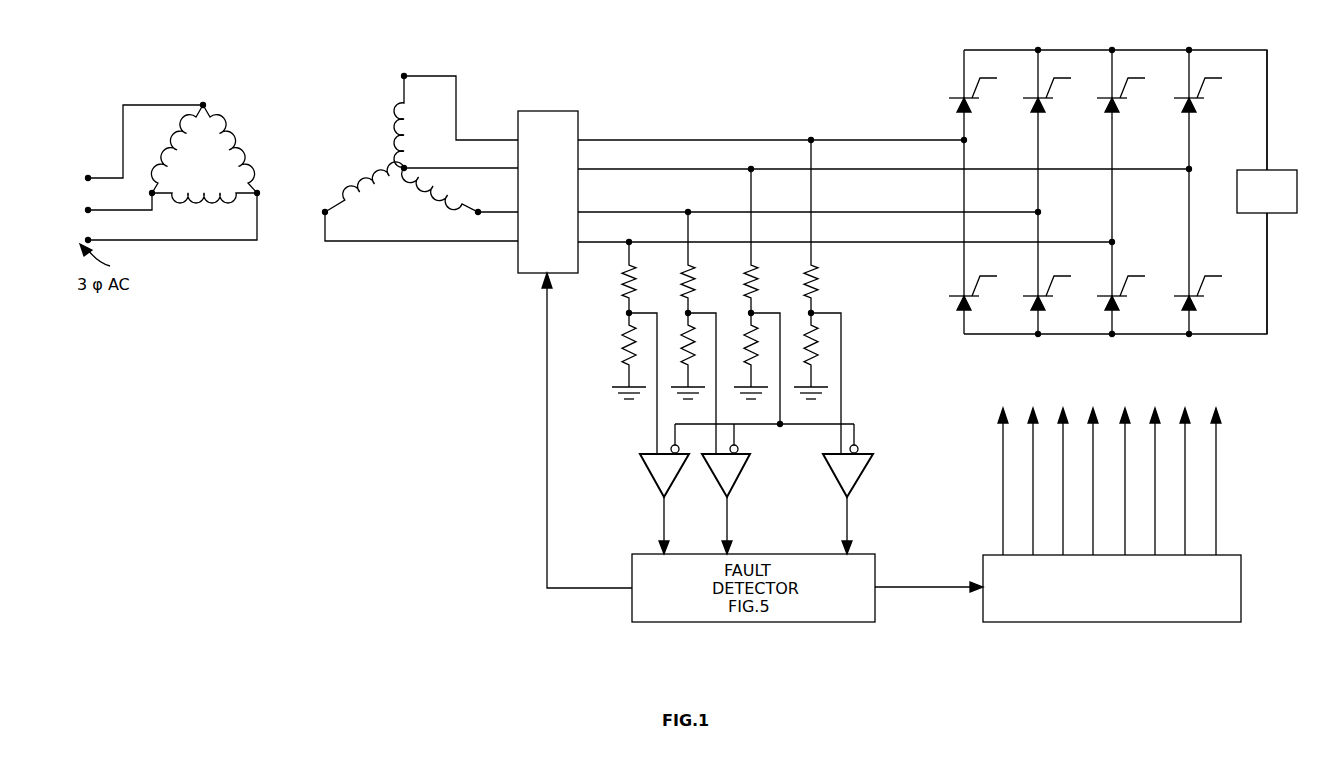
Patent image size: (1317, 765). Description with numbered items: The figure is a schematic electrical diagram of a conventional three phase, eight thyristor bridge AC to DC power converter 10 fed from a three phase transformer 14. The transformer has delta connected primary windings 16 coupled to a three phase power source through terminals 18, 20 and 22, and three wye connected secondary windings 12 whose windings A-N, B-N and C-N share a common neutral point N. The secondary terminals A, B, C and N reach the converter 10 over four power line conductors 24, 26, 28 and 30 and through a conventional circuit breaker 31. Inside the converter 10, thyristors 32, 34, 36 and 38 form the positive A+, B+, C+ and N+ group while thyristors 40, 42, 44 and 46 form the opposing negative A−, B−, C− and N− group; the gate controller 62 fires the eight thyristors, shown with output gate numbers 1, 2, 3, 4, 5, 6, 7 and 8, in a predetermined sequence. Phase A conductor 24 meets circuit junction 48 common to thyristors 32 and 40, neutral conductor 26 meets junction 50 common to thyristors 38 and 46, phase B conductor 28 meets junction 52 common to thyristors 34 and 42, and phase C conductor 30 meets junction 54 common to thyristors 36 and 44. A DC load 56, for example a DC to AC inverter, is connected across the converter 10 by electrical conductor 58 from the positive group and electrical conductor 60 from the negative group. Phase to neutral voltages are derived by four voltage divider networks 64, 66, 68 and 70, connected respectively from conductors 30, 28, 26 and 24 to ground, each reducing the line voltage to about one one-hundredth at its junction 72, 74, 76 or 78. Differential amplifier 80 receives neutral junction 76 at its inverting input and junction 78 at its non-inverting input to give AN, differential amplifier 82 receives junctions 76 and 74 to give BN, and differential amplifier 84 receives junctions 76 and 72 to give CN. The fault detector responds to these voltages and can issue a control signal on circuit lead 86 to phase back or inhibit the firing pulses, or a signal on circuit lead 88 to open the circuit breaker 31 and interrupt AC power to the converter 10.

The thyristor bridge AC to DC power converter 10 is at (942, 52).
The wye connected secondary windings 12 is at (439, 129).
The three phase transformer 14 is at (316, 140).
The delta connected primary windings 16 is at (214, 170).
The terminal 18 is at (98, 173).
The terminal 20 is at (92, 209).
The terminal 22 is at (92, 239).
The power line conductor 24 is at (838, 140).
The power line conductor 26 is at (856, 172).
The power line conductor 28 is at (856, 215).
The power line conductor 30 is at (856, 245).
The circuit breaker 31 is at (552, 110).
The thyristor 32 is at (973, 101).
The thyristor 34 is at (1048, 101).
The thyristor 36 is at (1117, 101).
The thyristor 38 is at (1195, 101).
The thyristor 40 is at (971, 300).
The thyristor 42 is at (1045, 300).
The thyristor 44 is at (1119, 300).
The thyristor 46 is at (1196, 300).
The circuit junction 48 is at (970, 145).
The circuit junction 50 is at (1184, 175).
The circuit junction 52 is at (1048, 212).
The circuit junction 54 is at (1122, 242).
The DC load 56 is at (1290, 166).
The electrical conductor 58 is at (1273, 88).
The electrical conductor 60 is at (1270, 276).
The gate controller unit 62 is at (1244, 556).
The voltage divider network 64 is at (645, 293).
The voltage divider network 66 is at (704, 293).
The voltage divider network 68 is at (767, 293).
The voltage divider network 70 is at (827, 293).
The junction 72 is at (624, 313).
The junction 74 is at (681, 313).
The junction 76 is at (744, 313).
The junction 78 is at (807, 313).
The differential amplifier 80 is at (864, 466).
The differential amplifier 82 is at (741, 476).
The differential amplifier 84 is at (645, 472).
The circuit lead 86 is at (941, 594).
The circuit lead 88 is at (545, 452).
The thyristor 1 is at (980, 115).
The thyristor 2 is at (1128, 313).
The thyristor 3 is at (1054, 115).
The thyristor 4 is at (980, 313).
The thyristor 5 is at (1128, 115).
The thyristor 6 is at (1054, 313).
The thyristor 7 is at (1205, 115).
The thyristor 8 is at (1205, 313).